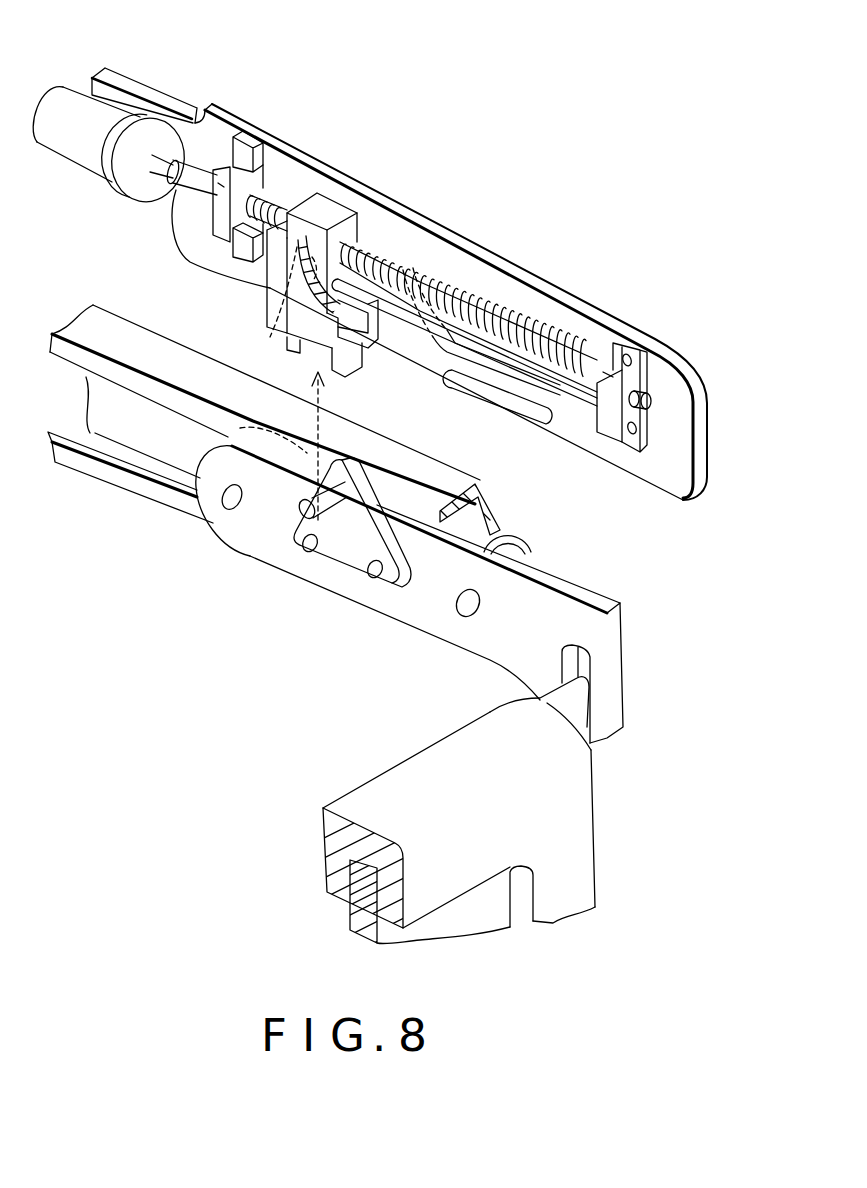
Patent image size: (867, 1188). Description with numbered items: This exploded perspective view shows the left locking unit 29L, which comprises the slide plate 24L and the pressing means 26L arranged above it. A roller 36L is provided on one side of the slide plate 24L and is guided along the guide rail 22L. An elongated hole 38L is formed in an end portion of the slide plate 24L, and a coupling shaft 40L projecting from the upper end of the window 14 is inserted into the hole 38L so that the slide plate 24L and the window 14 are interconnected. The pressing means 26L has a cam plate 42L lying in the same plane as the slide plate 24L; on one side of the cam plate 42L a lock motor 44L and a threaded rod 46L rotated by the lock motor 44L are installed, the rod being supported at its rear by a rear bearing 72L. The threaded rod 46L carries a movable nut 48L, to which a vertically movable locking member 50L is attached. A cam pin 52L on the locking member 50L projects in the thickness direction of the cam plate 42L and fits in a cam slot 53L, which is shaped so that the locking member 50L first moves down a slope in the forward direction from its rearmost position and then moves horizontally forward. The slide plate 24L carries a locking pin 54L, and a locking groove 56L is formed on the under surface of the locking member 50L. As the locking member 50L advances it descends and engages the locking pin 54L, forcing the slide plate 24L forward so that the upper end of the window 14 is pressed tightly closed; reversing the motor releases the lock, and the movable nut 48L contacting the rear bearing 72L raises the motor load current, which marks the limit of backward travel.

The window 14 is at (587, 832).
The guide rail 22L is at (125, 482).
The slide plate 24L is at (247, 555).
The pressing means 26L is at (460, 195).
The left locking unit 29L is at (572, 78).
The roller 36L is at (527, 550).
The elongated hole 38L is at (580, 670).
The coupling shaft 40L is at (580, 707).
The cam plate 42L is at (535, 272).
The lock motor 44L is at (77, 157).
The threaded rod 46L is at (455, 285).
The movable nut 48L is at (327, 207).
The locking member 50L is at (272, 308).
The cam pin 52L is at (265, 352).
The cam slot 53L is at (457, 377).
The locking pin 54L is at (320, 522).
The locking groove 56L is at (332, 372).
The rear bearing 72L is at (215, 220).